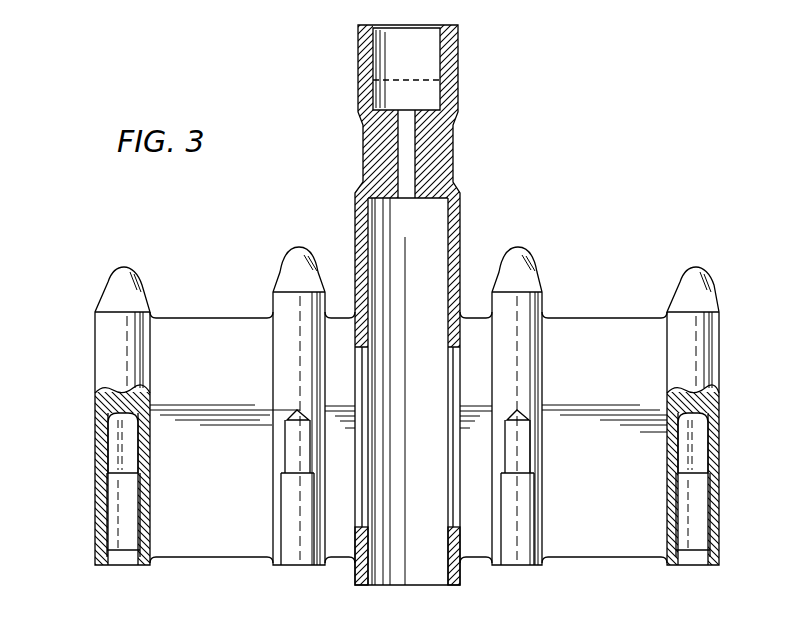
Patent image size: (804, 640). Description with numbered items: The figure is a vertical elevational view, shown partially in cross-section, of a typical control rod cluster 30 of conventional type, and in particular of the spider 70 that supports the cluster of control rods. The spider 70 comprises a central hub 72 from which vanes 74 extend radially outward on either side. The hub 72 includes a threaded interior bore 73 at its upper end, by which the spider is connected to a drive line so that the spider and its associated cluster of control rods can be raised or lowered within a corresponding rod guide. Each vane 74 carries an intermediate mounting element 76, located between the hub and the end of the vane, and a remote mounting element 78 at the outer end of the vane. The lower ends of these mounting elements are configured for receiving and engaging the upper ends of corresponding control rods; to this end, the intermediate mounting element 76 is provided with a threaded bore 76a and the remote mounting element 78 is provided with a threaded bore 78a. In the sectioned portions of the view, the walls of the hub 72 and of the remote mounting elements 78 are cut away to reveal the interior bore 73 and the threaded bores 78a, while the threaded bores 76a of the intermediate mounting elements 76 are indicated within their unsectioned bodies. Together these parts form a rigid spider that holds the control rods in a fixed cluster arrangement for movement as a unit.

The control rod cluster 30 is at (619, 165).
The spider 70 is at (460, 152).
The central hub 72 is at (355, 210).
The threaded interior bore 73 is at (376, 52).
The vane 74 is at (200, 558).
The intermediate mounting element 76 is at (280, 271).
The threaded bore 76a is at (282, 456).
The remote mounting element 78 is at (103, 293).
The threaded bore 78a is at (104, 445).